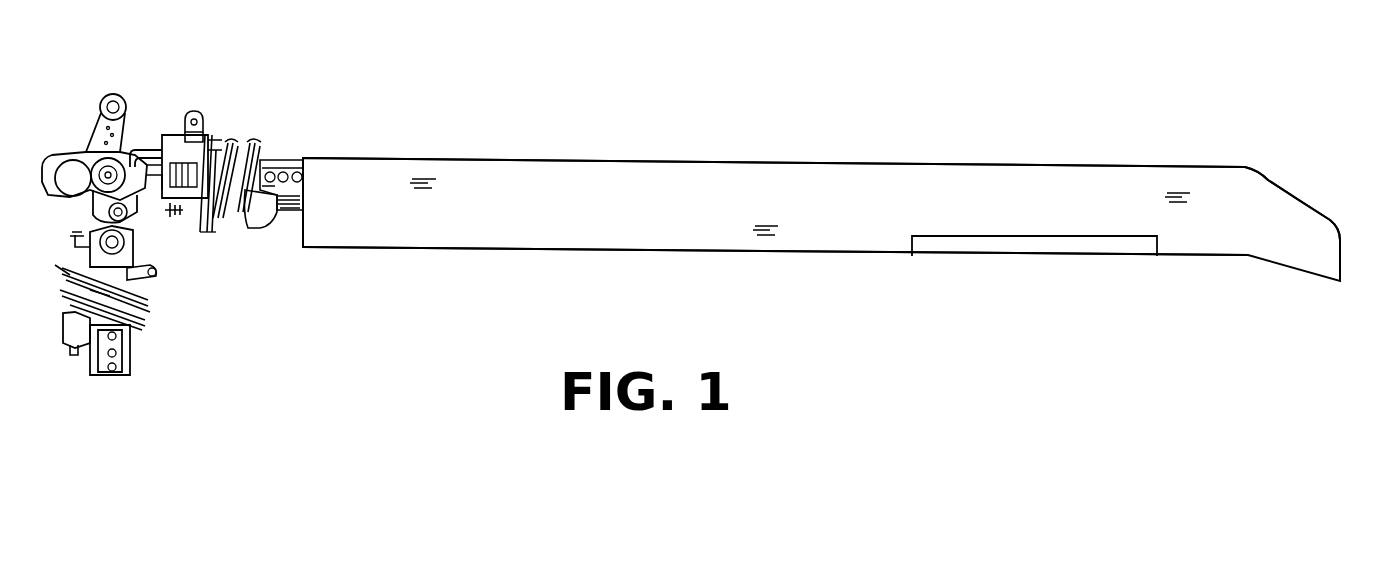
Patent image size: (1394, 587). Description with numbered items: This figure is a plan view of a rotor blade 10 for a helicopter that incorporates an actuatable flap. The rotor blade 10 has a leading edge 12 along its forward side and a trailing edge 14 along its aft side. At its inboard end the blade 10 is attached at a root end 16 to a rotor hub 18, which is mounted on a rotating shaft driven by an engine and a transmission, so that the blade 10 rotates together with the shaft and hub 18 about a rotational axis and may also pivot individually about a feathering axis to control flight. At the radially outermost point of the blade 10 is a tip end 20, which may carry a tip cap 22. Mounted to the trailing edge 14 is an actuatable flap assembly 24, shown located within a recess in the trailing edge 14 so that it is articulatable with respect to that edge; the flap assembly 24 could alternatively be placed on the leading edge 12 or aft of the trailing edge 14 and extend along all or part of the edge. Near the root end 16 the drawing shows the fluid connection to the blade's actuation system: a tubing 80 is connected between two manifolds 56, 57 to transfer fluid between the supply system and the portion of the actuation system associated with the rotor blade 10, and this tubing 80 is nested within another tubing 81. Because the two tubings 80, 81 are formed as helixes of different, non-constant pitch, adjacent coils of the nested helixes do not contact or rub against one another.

The rotor blade 10 is at (806, 292).
The leading edge 12 is at (537, 157).
The trailing edge 14 is at (672, 235).
The root end 16 is at (273, 157).
The rotor hub 18 is at (163, 106).
The tip end 20 is at (1265, 195).
The tip cap 22 is at (1303, 220).
The actuatable flap assembly 24 is at (1016, 250).
The manifold 56 is at (258, 223).
The manifold 57 is at (220, 133).
The tubing 80 is at (208, 223).
The tubing 81 is at (267, 157).